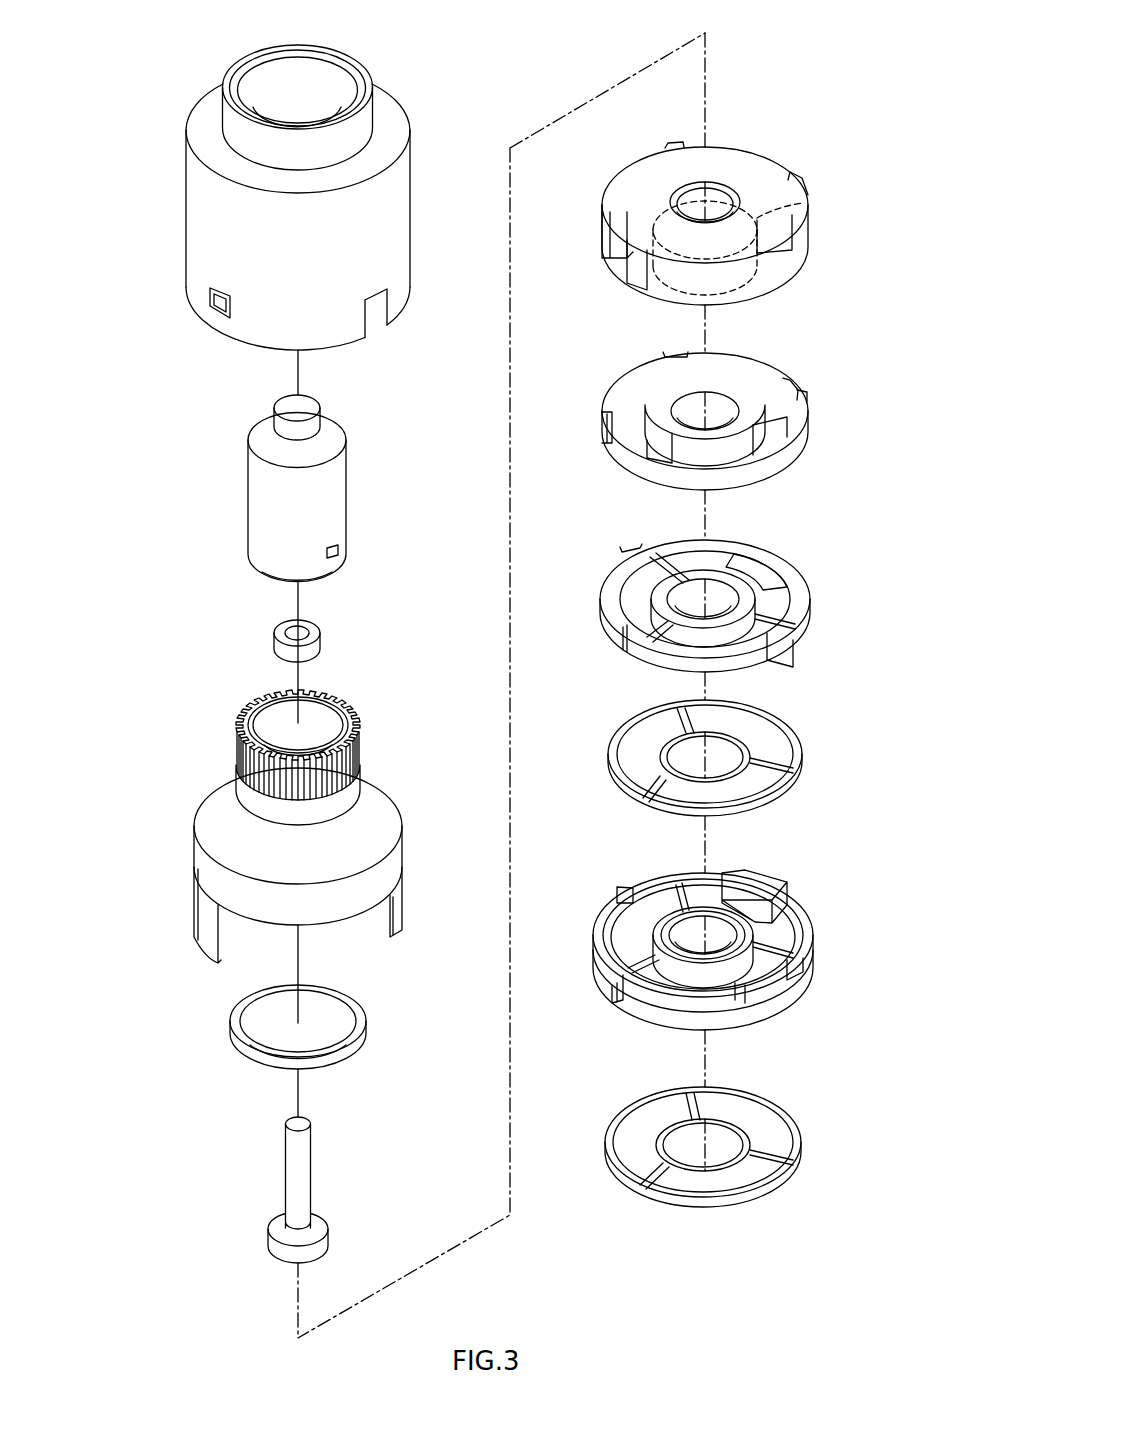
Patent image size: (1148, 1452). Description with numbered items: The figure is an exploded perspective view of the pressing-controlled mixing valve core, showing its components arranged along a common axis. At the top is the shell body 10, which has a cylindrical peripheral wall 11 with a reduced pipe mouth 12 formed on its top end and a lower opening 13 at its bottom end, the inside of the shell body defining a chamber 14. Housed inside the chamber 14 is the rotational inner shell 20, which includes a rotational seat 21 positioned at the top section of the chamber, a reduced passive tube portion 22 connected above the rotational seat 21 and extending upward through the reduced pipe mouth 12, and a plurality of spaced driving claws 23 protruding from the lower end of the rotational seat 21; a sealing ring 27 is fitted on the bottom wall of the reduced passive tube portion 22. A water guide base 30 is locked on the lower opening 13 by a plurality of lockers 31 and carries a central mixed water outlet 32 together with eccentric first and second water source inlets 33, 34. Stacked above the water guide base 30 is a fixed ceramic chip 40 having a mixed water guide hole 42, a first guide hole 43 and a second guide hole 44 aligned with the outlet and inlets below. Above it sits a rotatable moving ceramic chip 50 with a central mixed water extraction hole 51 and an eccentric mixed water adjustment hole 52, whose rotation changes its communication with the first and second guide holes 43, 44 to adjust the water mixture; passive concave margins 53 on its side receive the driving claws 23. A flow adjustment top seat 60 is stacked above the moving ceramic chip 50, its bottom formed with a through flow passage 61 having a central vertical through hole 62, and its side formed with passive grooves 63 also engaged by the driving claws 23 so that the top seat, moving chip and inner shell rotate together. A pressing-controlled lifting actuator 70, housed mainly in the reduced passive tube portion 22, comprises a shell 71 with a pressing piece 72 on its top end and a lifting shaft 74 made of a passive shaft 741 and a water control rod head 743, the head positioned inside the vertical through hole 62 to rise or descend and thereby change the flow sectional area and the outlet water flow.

The shell body 10 is at (264, 198).
The cylindrical peripheral wall 11 is at (193, 207).
The reduced pipe mouth 12 is at (322, 78).
The lower opening 13 is at (378, 327).
The chamber 14 is at (297, 120).
The rotational inner shell 20 is at (282, 825).
The rotational seat 21 is at (218, 875).
The reduced passive tube portion 22 is at (358, 760).
The driving claws 23 is at (206, 913).
The sealing ring 27 is at (282, 643).
The water guide base 30 is at (736, 929).
The lockers 31 is at (783, 880).
The mixed water outlet 32 is at (683, 927).
The first water source inlet 33 is at (790, 960).
The second water source inlet 34 is at (632, 925).
The fixed ceramic chip 40 is at (726, 581).
The mixed water guide hole 42 is at (700, 590).
The first guide hole 43 is at (776, 608).
The second guide hole 44 is at (630, 585).
The moving ceramic chip 50 is at (717, 392).
The mixed water extraction hole 51 is at (688, 400).
The mixed water adjustment hole 52 is at (768, 425).
The passive concave margins 53 is at (612, 440).
The flow adjustment top seat 60 is at (727, 176).
The through flow passage 61 is at (800, 205).
The vertical through hole 62 is at (722, 182).
The passive grooves 63 is at (612, 240).
The pressing-controlled lifting actuator 70 is at (278, 467).
The shell 71 is at (345, 490).
The pressing piece 72 is at (282, 403).
The lifting shaft 74 is at (275, 1208).
The passive shaft 741 is at (312, 1170).
The water control rod head 743 is at (268, 1243).